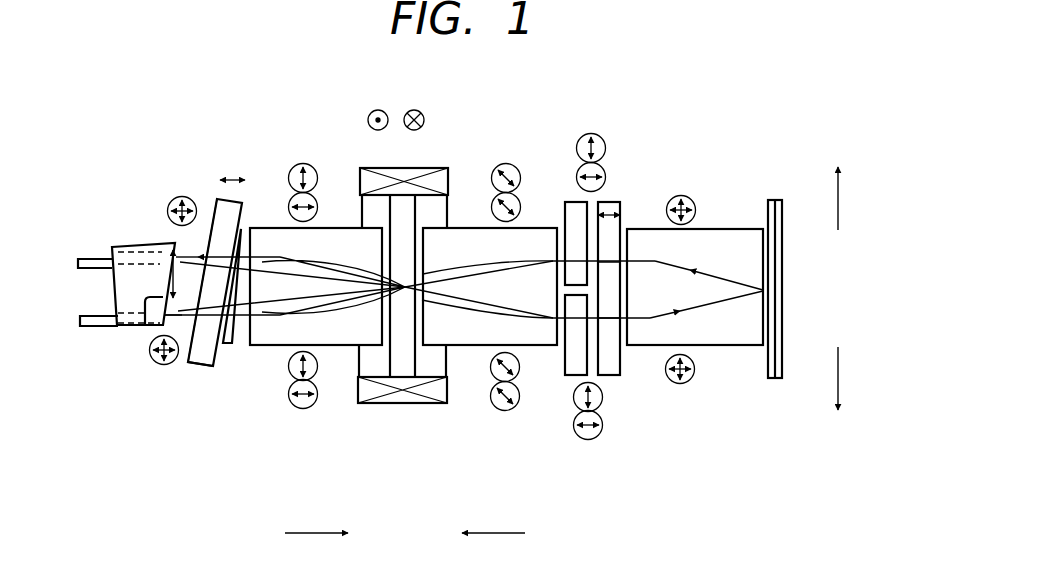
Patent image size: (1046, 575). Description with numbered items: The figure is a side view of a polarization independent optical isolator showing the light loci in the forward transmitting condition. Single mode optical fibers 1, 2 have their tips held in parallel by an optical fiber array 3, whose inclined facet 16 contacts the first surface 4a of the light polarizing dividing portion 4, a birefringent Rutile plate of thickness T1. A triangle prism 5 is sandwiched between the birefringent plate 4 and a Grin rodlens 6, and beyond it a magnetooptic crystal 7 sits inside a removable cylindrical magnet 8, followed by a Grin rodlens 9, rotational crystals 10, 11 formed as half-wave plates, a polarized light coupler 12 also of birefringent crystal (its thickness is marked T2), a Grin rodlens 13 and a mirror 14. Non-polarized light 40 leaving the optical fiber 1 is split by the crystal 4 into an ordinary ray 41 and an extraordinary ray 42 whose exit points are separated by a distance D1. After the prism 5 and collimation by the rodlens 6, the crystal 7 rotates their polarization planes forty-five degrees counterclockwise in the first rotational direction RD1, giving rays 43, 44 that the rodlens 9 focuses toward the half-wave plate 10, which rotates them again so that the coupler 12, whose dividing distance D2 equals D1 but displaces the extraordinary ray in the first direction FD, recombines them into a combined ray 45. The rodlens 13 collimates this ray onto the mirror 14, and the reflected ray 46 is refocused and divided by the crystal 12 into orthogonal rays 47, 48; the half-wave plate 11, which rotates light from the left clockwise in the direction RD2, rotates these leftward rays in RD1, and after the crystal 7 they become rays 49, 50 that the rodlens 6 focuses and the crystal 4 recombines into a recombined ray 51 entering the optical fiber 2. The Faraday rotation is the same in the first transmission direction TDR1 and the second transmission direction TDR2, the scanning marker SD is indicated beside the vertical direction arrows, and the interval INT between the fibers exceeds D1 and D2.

The single mode optical fiber 1 is at (100, 258).
The single mode optical fiber 2 is at (97, 327).
The optical fiber array 3 is at (127, 327).
The light polarizing dividing portion 4 is at (203, 372).
The first surface 4a is at (188, 367).
The triangle prism 5 is at (234, 346).
The Grin rodlens 6 is at (333, 224).
The magnetooptic crystal 7 is at (393, 404).
The cylindrical magnet 8 is at (420, 404).
The Grin rodlens 9 is at (473, 227).
The rotational crystal 10 is at (560, 378).
The rotational crystal 11 is at (568, 201).
The polarized light coupler 12 is at (620, 363).
The Grin rodlens 13 is at (748, 229).
The mirror 14 is at (775, 200).
The facet 16 is at (150, 327).
The non-polarized light 40 is at (196, 256).
The linearly polarized ordinary ray 41 is at (263, 262).
The linearly polarized extraordinary ray 42 is at (277, 262).
The linearly polarized ray 43 is at (463, 318).
The linearly polarized ray 44 is at (468, 312).
The combined ray 45 is at (650, 318).
The reflected ray 46 is at (628, 258).
The linearly polarized orthogonal ray 47 is at (533, 273).
The linearly polarized orthogonal ray 48 is at (521, 262).
The linearly polarized ray 49 is at (274, 320).
The linearly polarized ray 50 is at (255, 320).
The recombined ray 51 is at (175, 320).
The interval INT is at (172, 250).
The separation distance D1 is at (217, 199).
The distance D2 is at (602, 263).
The thickness T1 is at (233, 178).
The thickness T2 is at (612, 201).
The first rotational direction RD1 is at (414, 110).
The rotational direction RD2 is at (376, 110).
The first transmission direction TDR1 is at (310, 527).
The second transmission direction TDR2 is at (490, 531).
The scanning direction SD is at (840, 205).
The first direction FD is at (840, 372).